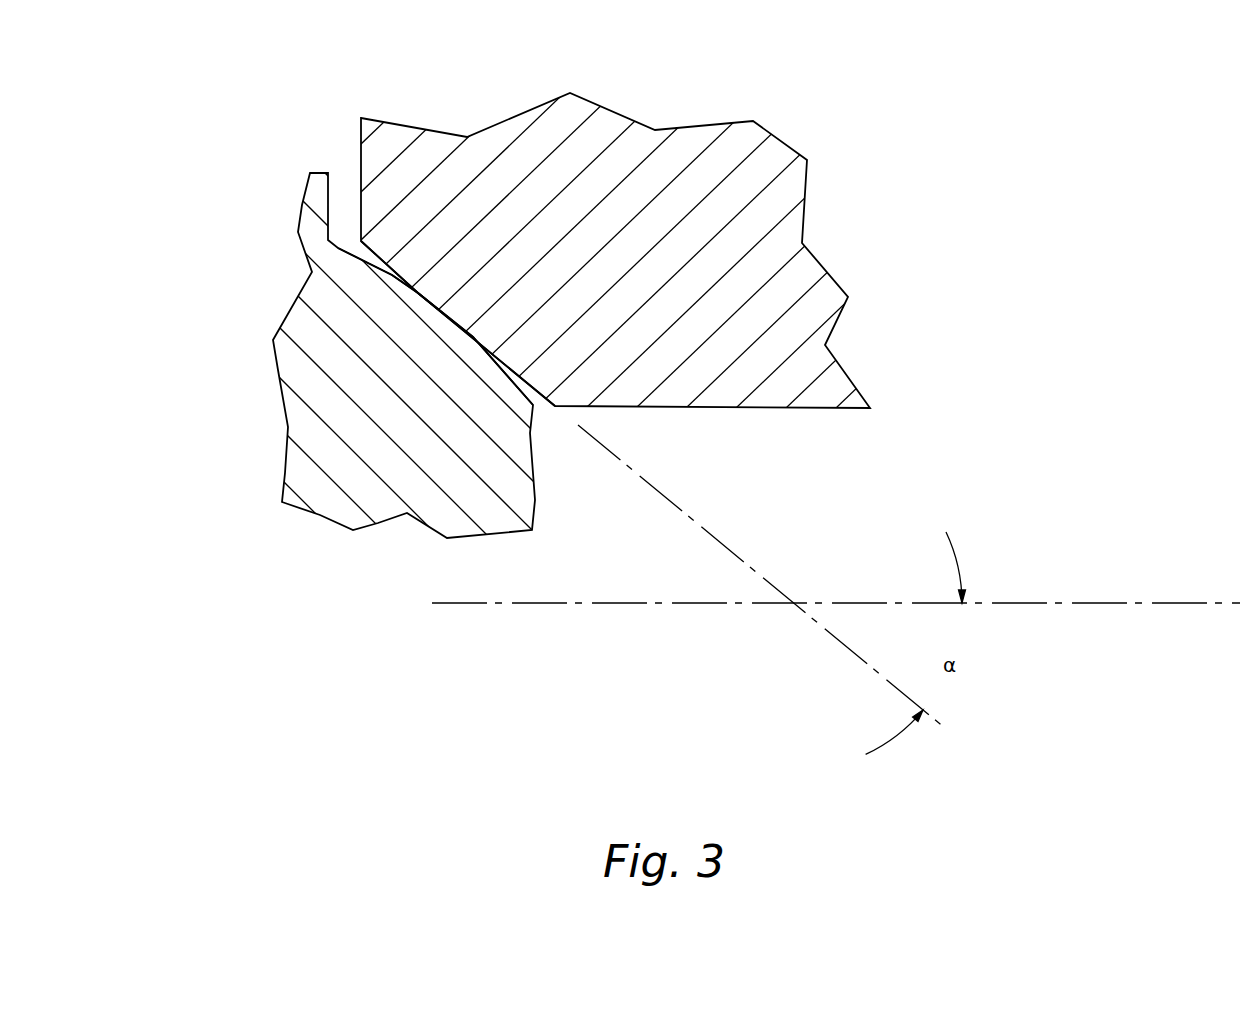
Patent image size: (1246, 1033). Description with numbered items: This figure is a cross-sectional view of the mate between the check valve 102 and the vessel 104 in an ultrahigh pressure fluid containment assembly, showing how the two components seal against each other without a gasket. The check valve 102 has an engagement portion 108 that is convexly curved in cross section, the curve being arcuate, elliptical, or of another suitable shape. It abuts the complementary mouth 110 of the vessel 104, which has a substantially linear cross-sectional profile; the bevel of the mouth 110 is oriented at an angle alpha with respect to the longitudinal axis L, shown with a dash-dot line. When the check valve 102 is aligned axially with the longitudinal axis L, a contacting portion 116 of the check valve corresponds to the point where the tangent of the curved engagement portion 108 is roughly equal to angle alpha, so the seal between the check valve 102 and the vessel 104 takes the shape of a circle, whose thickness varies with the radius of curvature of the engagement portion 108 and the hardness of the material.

The check valve 102 is at (317, 517).
The vessel 104 is at (640, 122).
The engagement portion 108 is at (402, 250).
The mouth 110 is at (407, 303).
The contacting portion 116 is at (465, 328).
The longitudinal axis L is at (1062, 603).